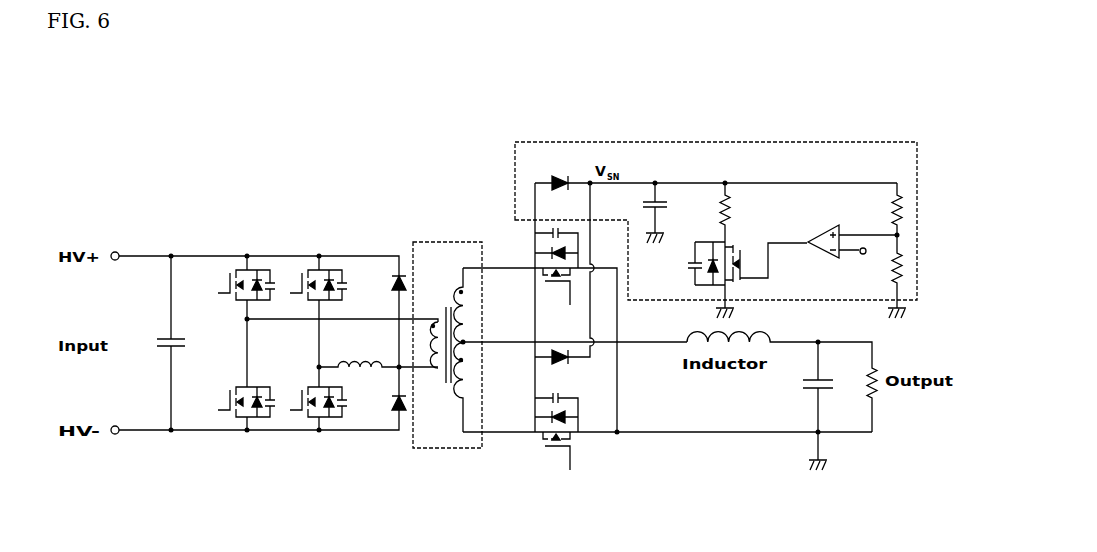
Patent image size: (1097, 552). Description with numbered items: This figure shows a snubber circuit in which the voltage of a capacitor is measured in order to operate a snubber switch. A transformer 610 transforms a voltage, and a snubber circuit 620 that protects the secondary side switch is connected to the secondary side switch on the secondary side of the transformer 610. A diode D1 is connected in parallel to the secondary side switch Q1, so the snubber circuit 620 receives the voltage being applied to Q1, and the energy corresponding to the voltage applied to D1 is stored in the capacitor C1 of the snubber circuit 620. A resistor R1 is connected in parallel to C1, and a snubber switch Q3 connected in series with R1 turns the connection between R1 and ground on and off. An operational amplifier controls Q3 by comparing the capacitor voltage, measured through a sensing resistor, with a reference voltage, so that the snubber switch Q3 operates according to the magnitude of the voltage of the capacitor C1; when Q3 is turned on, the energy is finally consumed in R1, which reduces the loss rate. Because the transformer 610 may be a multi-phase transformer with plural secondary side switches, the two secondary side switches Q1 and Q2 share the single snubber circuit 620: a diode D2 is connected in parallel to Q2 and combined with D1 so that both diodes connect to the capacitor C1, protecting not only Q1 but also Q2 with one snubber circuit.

The transformer 610 is at (448, 448).
The snubber circuit 620 is at (783, 141).
The diode D1 is at (562, 172).
The diode D2 is at (556, 369).
The secondary side switch Q1 is at (556, 269).
The secondary side switch Q2 is at (556, 416).
The snubber switch Q3 is at (732, 280).
The capacitor C1 is at (644, 213).
The resistor R1 is at (740, 212).